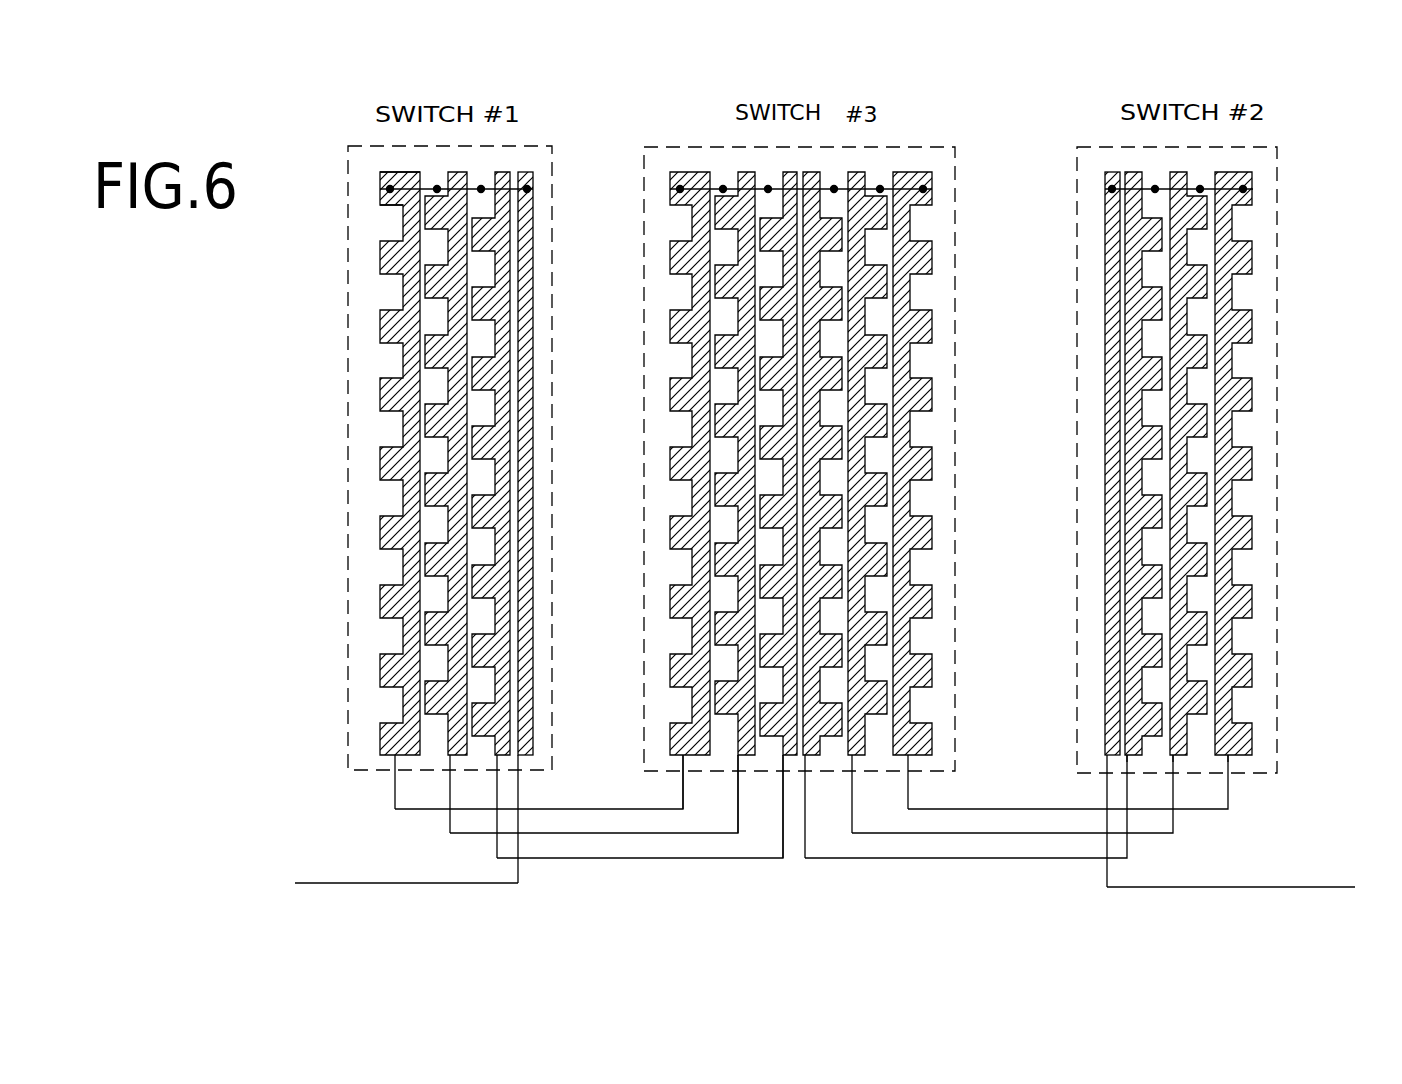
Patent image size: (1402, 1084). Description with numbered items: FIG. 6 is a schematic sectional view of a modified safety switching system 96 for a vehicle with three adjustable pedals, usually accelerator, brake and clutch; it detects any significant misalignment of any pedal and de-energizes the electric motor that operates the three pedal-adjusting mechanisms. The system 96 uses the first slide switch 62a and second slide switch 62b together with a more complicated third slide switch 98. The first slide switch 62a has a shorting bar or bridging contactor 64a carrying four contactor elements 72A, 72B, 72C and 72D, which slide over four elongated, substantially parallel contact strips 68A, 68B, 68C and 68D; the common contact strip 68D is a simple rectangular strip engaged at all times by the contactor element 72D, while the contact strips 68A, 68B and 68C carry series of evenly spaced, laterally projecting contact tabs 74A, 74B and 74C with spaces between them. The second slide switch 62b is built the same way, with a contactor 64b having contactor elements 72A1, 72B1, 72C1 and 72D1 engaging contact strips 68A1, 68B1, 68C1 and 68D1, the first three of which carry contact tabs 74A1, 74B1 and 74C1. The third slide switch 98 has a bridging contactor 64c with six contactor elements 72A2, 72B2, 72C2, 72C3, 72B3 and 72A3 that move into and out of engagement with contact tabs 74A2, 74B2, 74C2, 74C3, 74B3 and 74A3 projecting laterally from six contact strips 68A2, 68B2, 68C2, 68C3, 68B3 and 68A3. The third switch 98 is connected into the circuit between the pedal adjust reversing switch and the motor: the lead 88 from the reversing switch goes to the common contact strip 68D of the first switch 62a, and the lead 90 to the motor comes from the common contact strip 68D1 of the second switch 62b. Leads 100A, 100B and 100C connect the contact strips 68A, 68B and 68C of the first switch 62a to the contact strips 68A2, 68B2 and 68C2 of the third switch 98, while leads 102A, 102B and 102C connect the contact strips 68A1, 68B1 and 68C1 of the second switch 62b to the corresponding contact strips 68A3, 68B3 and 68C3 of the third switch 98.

The safety switching system 96 is at (318, 148).
The third slide switch 98 is at (930, 140).
The first slide switch 62a is at (298, 525).
The second slide switch 62b is at (1283, 468).
The bridging contactor 64a is at (392, 200).
The switch #2 contact board 64b is at (1122, 178).
The bridging contactor 64c is at (690, 192).
The contactor element 72A is at (390, 189).
The contactor element 72B is at (437, 189).
The contactor element 72C is at (527, 189).
The contactor element 72D is at (535, 195).
The contact tabs 74A is at (390, 595).
The contact tabs 74B is at (437, 685).
The contact tabs 74C is at (480, 716).
The first contact strip 68A is at (395, 765).
The second contact strip 68B is at (450, 765).
The third contact strip 68C is at (497, 765).
The common contact strip 68D is at (518, 758).
The lead 88 is at (333, 883).
The lead 90 is at (1290, 887).
The lead 100A is at (628, 808).
The lead 100B is at (608, 833).
The lead 100C is at (738, 858).
The lead 102A is at (1040, 809).
The lead 102B is at (1065, 836).
The lead 102C is at (993, 860).
The contactor element 72A2 is at (680, 189).
The contactor element 72B2 is at (723, 189).
The contactor element 72C2 is at (768, 189).
The contactor element 72C3 is at (835, 189).
The contactor element 72B3 is at (880, 189).
The contactor element 72A3 is at (923, 189).
The contact tabs 74A2 is at (670, 330).
The contact tabs 74B2 is at (715, 425).
The contact tabs 74C2 is at (760, 585).
The contact tabs 74C3 is at (842, 580).
The contact tabs 74B3 is at (887, 425).
The contact tabs 74A3 is at (932, 325).
The first contact strip 68A2 is at (695, 762).
The second contact strip 68B2 is at (728, 762).
The third contact strip 68C2 is at (778, 762).
The contact strip 68C3 is at (812, 762).
The contact strip 68B3 is at (862, 762).
The contact strip 68A3 is at (916, 762).
The contactor element 72A1 is at (1253, 189).
The contactor element 72B1 is at (1207, 215).
The contactor element 72C1 is at (1155, 189).
The contactor element 72D1 is at (1107, 189).
The contact tabs 74A1 is at (1242, 322).
The contact tabs 74B1 is at (1205, 415).
The contact tabs 74C1 is at (1235, 508).
The first contact strip 68A1 is at (1222, 760).
The second contact strip 68B1 is at (1178, 760).
The third contact strip 68C1 is at (1130, 760).
The common contact strip 68D1 is at (1102, 738).